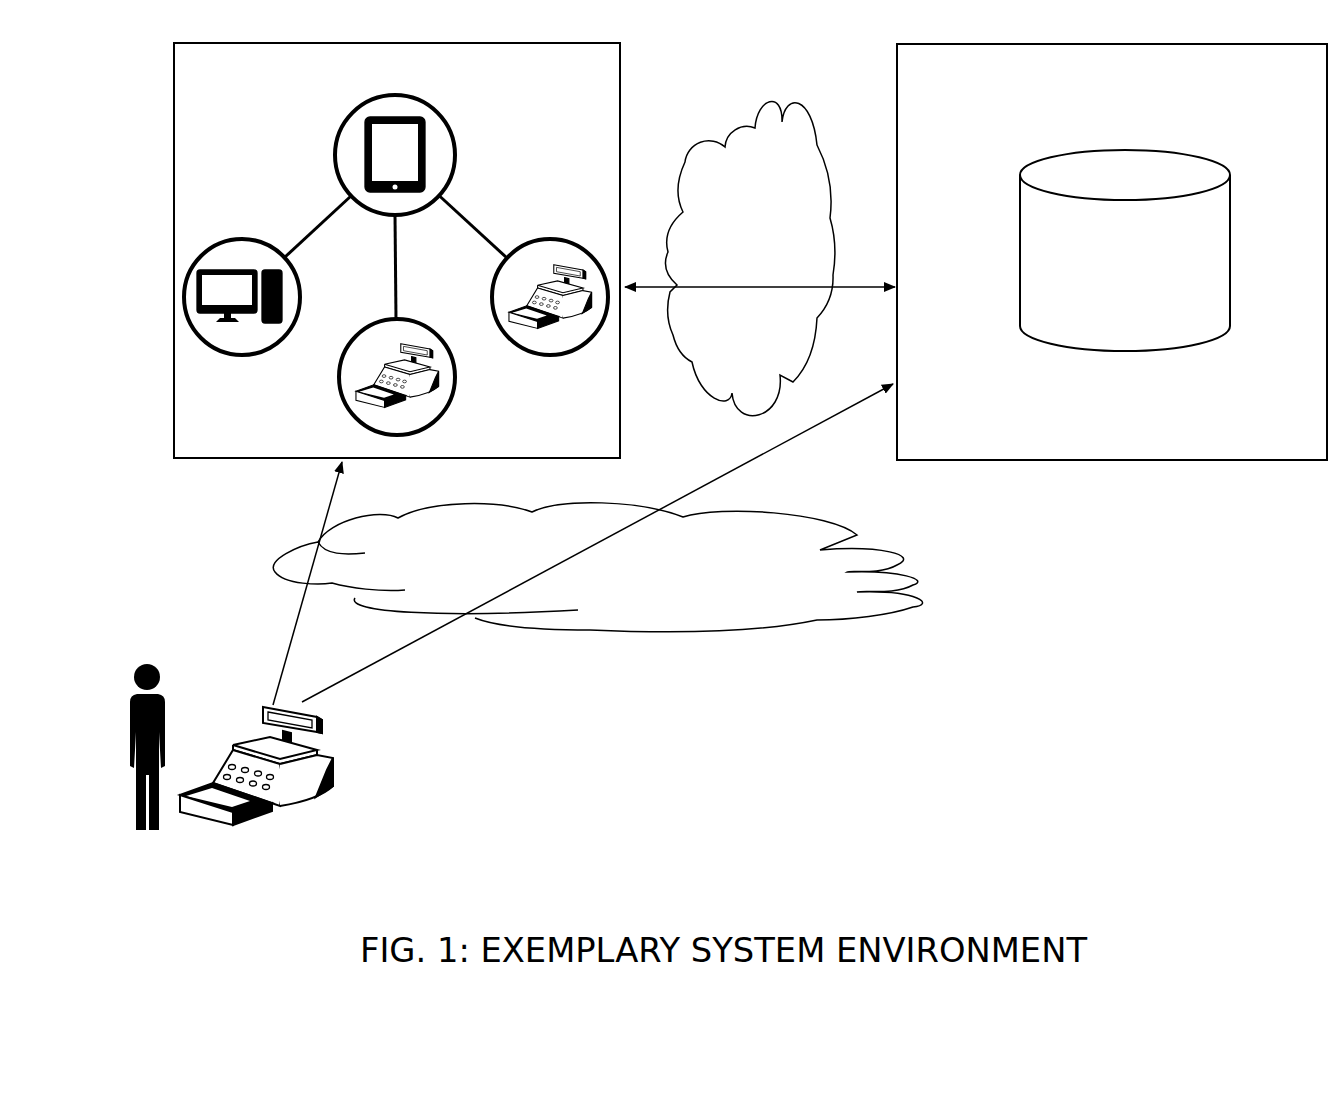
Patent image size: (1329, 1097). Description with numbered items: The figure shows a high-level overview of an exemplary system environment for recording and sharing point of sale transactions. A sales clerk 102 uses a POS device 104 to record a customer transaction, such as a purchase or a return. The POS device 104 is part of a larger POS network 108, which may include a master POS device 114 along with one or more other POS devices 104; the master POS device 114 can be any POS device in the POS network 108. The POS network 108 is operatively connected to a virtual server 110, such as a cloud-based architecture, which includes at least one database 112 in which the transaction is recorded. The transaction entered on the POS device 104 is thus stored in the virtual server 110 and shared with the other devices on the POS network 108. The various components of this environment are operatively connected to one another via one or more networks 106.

The sales clerk 102 is at (150, 836).
The POS device 104 is at (333, 155).
The network 106 is at (768, 243).
The POS network 108 is at (495, 74).
The virtual server 110 is at (1242, 70).
The database 112 is at (1206, 274).
The master POS device 114 is at (542, 233).